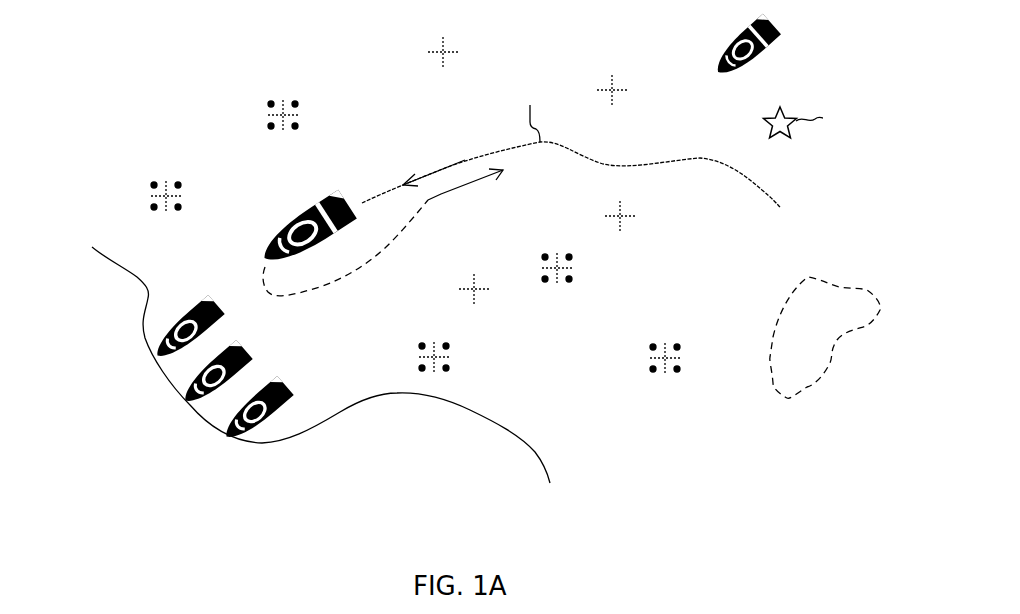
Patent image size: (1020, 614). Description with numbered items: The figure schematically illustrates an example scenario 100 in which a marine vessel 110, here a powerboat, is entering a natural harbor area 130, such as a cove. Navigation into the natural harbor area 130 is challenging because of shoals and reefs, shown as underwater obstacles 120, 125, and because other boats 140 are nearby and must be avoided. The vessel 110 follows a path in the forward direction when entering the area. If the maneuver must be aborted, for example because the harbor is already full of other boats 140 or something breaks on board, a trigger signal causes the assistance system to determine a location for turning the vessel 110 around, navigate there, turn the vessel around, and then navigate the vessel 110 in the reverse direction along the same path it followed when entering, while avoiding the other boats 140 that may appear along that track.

The example scenario 100 is at (92, 59).
The marine vessel 110 is at (302, 212).
The underwater obstacle 120 is at (639, 233).
The underwater obstacle 125 is at (693, 350).
The natural harbor area 130 is at (208, 452).
The other boats 140 is at (723, 48).